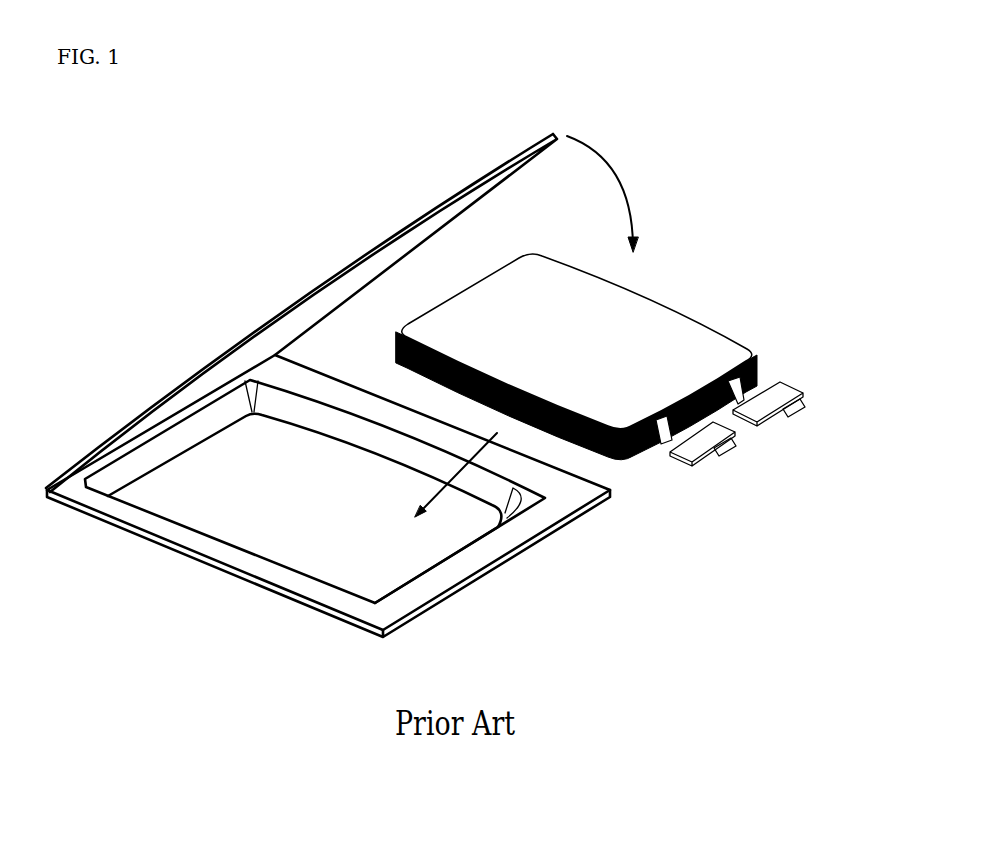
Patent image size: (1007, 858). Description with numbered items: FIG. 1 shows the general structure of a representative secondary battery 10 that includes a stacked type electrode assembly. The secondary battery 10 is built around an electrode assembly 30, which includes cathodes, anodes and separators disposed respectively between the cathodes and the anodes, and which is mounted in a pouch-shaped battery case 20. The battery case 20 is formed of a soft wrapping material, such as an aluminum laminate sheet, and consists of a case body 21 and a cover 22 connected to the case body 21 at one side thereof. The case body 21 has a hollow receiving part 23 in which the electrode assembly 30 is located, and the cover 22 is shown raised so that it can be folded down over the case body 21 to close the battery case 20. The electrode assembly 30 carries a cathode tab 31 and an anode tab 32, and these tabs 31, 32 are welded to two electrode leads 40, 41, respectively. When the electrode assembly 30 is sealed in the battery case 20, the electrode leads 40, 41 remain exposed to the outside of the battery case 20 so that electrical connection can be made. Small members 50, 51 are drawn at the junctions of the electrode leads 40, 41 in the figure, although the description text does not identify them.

The secondary battery 10 is at (88, 178).
The battery case 20 is at (170, 356).
The case body 21 is at (243, 577).
The cover 22 is at (358, 255).
The receiving part 23 is at (205, 508).
The electrode assembly 30 is at (622, 333).
The cathode tab 31 is at (742, 386).
The anode tab 32 is at (663, 440).
The electrode lead 40 is at (800, 403).
The electrode lead 41 is at (720, 453).
The first insulating tape 50 is at (760, 408).
The second insulating tape 51 is at (733, 433).